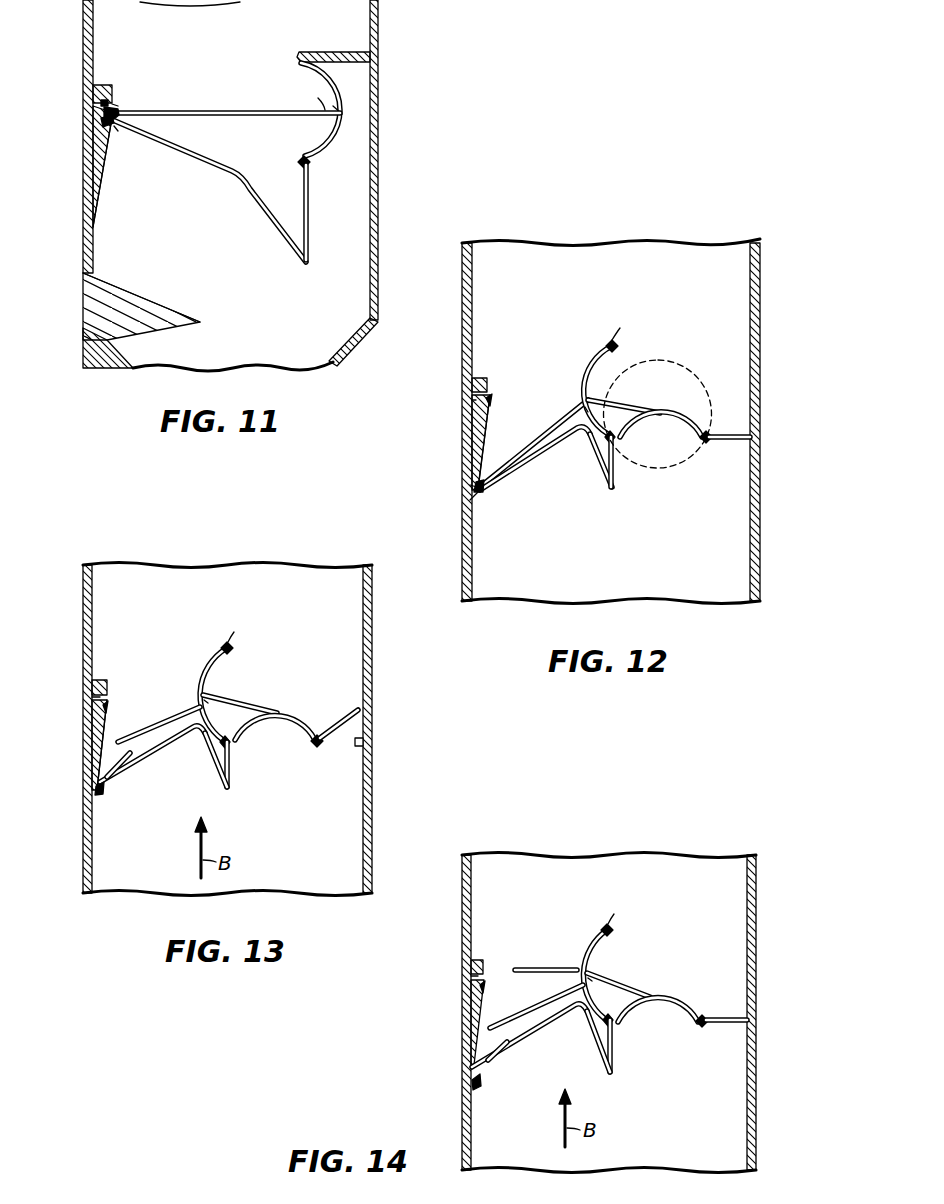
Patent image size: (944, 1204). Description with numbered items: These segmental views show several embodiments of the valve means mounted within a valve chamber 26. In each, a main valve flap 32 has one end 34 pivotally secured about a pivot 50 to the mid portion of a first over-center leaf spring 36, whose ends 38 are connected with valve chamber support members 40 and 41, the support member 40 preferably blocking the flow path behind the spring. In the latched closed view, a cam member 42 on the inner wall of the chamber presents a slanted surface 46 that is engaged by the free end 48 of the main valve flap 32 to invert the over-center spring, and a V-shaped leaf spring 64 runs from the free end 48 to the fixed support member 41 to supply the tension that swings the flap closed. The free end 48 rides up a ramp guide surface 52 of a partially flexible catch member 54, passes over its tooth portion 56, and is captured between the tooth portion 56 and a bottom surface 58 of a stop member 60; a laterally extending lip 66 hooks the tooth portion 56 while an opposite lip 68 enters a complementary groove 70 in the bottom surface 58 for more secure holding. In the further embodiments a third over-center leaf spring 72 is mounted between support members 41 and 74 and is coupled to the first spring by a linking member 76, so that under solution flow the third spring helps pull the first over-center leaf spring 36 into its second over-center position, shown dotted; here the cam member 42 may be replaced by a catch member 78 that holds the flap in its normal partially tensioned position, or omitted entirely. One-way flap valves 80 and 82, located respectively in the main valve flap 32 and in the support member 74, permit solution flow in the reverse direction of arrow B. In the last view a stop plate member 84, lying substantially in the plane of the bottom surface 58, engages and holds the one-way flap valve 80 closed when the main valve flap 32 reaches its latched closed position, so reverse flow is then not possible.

In FIG. 12, the valve chamber 26 is at (760, 342).
In FIG. 13, the valve chamber 26 is at (372, 607).
In FIG. 14, the valve chamber 26 is at (755, 888).
In FIG. 11, the main valve flap 32 is at (213, 109).
In FIG. 12, the main valve flap 32 is at (492, 470).
In FIG. 13, the main valve flap 32 is at (187, 709).
In FIG. 14, the main valve flap 32 is at (529, 1035).
In FIG. 11, the one end of main valve flap 34 is at (315, 102).
In FIG. 12, the one end of main valve flap 34 is at (568, 412).
In FIG. 11, the first over-center leaf spring 36 is at (340, 93).
In FIG. 12, the first over-center leaf spring 36 is at (595, 372).
In FIG. 13, the first over-center leaf spring 36 is at (208, 672).
In FIG. 14, the first over-center leaf spring 36 is at (594, 952).
In FIG. 11, the ends of leaf spring 38 is at (340, 70).
In FIG. 12, the ends of leaf spring 38 is at (624, 349).
In FIG. 13, the ends of leaf spring 38 is at (224, 659).
In FIG. 14, the ends of leaf spring 38 is at (610, 934).
In FIG. 11, the support member 40 is at (335, 52).
In FIG. 12, the support member 40 is at (620, 334).
In FIG. 13, the support member 40 is at (228, 648).
In FIG. 14, the support member 40 is at (608, 924).
In FIG. 11, the support member 41 is at (309, 236).
In FIG. 12, the support member 41 is at (618, 480).
In FIG. 13, the support member 41 is at (232, 776).
In FIG. 14, the support member 41 is at (613, 1051).
In FIG. 11, the cam member 42 is at (90, 292).
In FIG. 11, the slanted surface 46 is at (165, 310).
In FIG. 11, the free end of valve flap 48 is at (121, 112).
In FIG. 12, the free end of valve flap 48 is at (506, 478).
In FIG. 11, the pivot 50 is at (341, 117).
In FIG. 12, the pivot 50 is at (585, 439).
In FIG. 13, the pivot 50 is at (212, 696).
In FIG. 14, the pivot 50 is at (591, 973).
In FIG. 11, the ramp guide surface 52 is at (104, 163).
In FIG. 12, the ramp guide surface 52 is at (492, 420).
In FIG. 13, the ramp guide surface 52 is at (92, 732).
In FIG. 11, the catch member 54 is at (95, 169).
In FIG. 12, the catch member 54 is at (470, 432).
In FIG. 13, the catch member 54 is at (90, 750).
In FIG. 14, the catch member 54 is at (469, 1022).
In FIG. 11, the tooth portion 56 is at (114, 128).
In FIG. 12, the tooth portion 56 is at (489, 397).
In FIG. 13, the tooth portion 56 is at (92, 705).
In FIG. 14, the tooth portion 56 is at (475, 986).
In FIG. 12, the bottom surface of stop member 58 is at (470, 400).
In FIG. 13, the bottom surface of stop member 58 is at (108, 697).
In FIG. 14, the bottom surface of stop member 58 is at (482, 976).
In FIG. 11, the stop member 60 is at (105, 86).
In FIG. 12, the stop member 60 is at (486, 379).
In FIG. 13, the stop member 60 is at (102, 680).
In FIG. 14, the stop member 60 is at (479, 958).
In FIG. 11, the V-shaped leaf spring 64 is at (274, 200).
In FIG. 12, the V-shaped leaf spring 64 is at (593, 473).
In FIG. 13, the V-shaped leaf spring 64 is at (203, 760).
In FIG. 14, the V-shaped leaf spring 64 is at (587, 1035).
In FIG. 11, the laterally extending lip 66 is at (101, 122).
In FIG. 12, the laterally extending lip 66 is at (470, 485).
In FIG. 13, the laterally extending lip 66 is at (92, 800).
In FIG. 14, the laterally extending lip 66 is at (469, 1080).
In FIG. 11, the laterally extending lip 68 is at (101, 107).
In FIG. 11, the complementary groove 70 is at (116, 109).
In FIG. 12, the third over-center leaf spring 72 is at (690, 420).
In FIG. 13, the third over-center leaf spring 72 is at (307, 731).
In FIG. 14, the third over-center leaf spring 72 is at (698, 1010).
In FIG. 12, the support member 74 is at (725, 430).
In FIG. 13, the support member 74 is at (326, 753).
In FIG. 14, the support member 74 is at (730, 1023).
In FIG. 12, the linking member 76 is at (650, 404).
In FIG. 13, the linking member 76 is at (266, 706).
In FIG. 14, the linking member 76 is at (644, 991).
In FIG. 12, the catch member 78 is at (470, 500).
In FIG. 13, the one-way flap valve 80 is at (130, 740).
In FIG. 14, the one-way flap valve 80 is at (500, 1026).
In FIG. 13, the one-way flap valve 82 is at (356, 714).
In FIG. 14, the stop plate member 84 is at (544, 968).